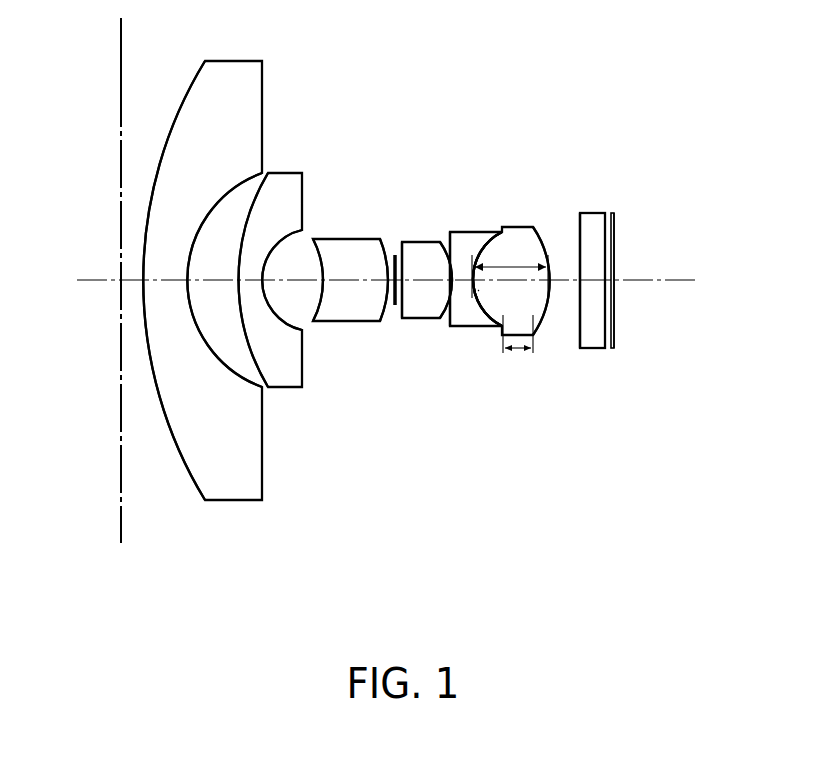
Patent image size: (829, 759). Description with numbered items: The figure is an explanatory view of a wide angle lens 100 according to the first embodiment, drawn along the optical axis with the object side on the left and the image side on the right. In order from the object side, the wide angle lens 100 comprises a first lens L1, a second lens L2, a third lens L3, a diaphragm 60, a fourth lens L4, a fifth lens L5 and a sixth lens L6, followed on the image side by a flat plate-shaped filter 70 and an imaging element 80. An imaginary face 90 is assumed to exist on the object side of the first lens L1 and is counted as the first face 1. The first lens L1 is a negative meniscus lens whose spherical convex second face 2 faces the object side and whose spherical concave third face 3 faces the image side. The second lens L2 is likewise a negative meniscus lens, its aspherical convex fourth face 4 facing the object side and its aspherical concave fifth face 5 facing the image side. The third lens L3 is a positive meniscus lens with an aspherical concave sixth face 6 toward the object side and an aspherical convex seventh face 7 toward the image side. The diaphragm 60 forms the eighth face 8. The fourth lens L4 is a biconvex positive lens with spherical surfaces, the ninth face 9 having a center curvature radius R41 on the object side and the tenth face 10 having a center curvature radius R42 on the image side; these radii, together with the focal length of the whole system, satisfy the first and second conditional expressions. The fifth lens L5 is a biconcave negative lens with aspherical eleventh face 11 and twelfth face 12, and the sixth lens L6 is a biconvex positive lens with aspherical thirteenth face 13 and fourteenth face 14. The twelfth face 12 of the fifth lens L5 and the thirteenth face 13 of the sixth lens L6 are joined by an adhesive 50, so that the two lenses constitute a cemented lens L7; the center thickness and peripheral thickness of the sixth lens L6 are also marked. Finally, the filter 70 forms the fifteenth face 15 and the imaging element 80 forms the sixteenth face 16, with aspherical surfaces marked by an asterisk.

The wide angle lens 100 is at (548, 85).
The imaginary face 90 is at (122, 33).
The first face 1 is at (122, 75).
The second face 2 is at (160, 160).
The third face 3 is at (202, 332).
The fourth face 4 is at (238, 315).
The fifth face 5 is at (268, 313).
The sixth face 6 is at (317, 300).
The seventh face 7 is at (387, 293).
The diaphragm 60 is at (403, 226).
The eighth face 8 is at (392, 250).
The ninth face 9 is at (410, 320).
The center curvature radius of the ninth face R41 is at (405, 300).
The tenth face 10 is at (453, 335).
The center curvature radius of the tenth face R42 is at (443, 300).
The eleventh face 11 is at (455, 300).
The twelfth face 12 is at (480, 315).
The thirteenth face 13 is at (488, 255).
The fourteenth face 14 is at (548, 300).
The adhesive 50 is at (478, 290).
The filter 70 is at (590, 213).
The fifteenth face 15 is at (582, 293).
The imaging element 80 is at (614, 228).
The sixteenth face 16 is at (614, 258).
The first lens L1 is at (238, 68).
The second lens L2 is at (288, 179).
The third lens L3 is at (345, 245).
The fourth lens L4 is at (420, 245).
The fifth lens L5 is at (470, 232).
The sixth lens L6 is at (517, 227).
The cemented lens L7 is at (553, 163).